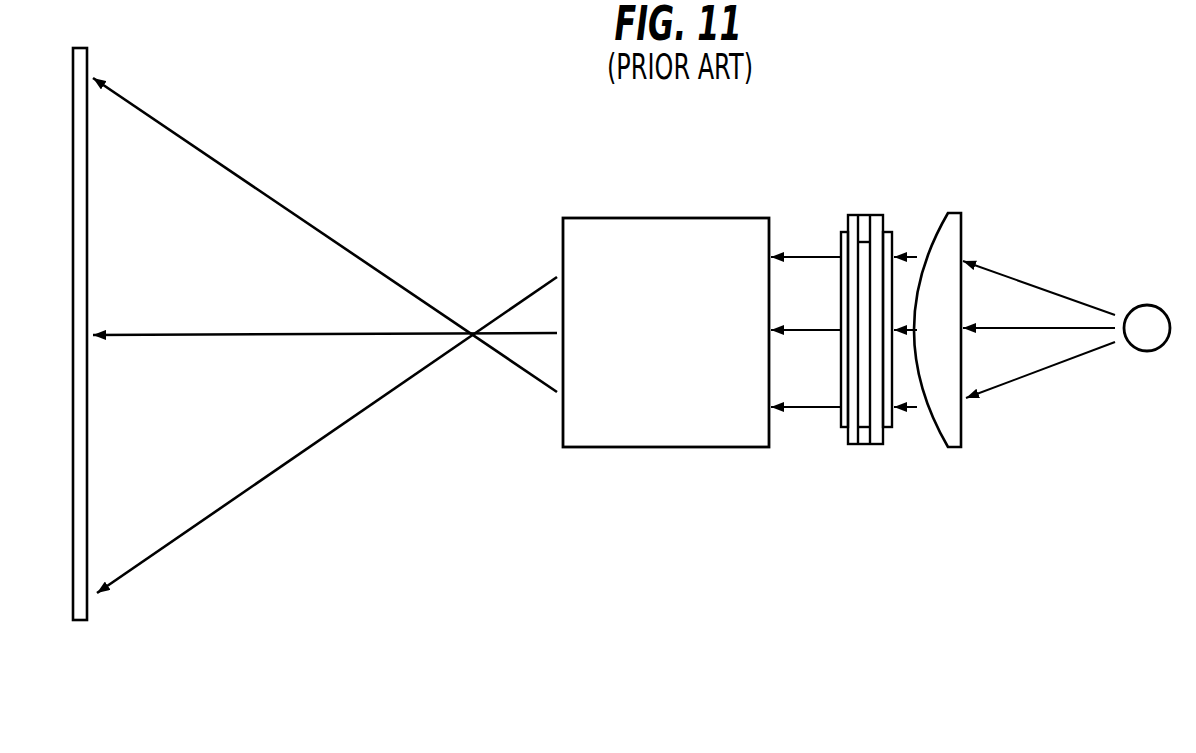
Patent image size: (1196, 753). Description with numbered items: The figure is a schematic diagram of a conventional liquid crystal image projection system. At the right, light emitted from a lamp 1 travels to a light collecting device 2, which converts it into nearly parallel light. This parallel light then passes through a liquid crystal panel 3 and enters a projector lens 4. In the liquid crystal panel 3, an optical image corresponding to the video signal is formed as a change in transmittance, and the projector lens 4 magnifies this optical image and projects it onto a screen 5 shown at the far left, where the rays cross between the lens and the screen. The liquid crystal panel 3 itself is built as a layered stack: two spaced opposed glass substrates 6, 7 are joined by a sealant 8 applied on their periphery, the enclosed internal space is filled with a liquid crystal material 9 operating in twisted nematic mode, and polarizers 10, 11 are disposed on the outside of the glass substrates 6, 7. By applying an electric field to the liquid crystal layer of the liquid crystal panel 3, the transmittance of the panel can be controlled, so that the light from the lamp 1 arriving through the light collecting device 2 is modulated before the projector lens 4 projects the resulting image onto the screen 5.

The lamp 1 is at (1140, 318).
The light collecting device 2 is at (952, 213).
The liquid crystal panel 3 is at (888, 192).
The projector lens 4 is at (688, 217).
The screen 5 is at (103, 319).
The glass substrate 6 is at (878, 447).
The glass substrate 7 is at (850, 444).
The sealant 8 is at (877, 214).
The liquid crystal material 9 is at (863, 257).
The polarizer 10 is at (892, 433).
The polarizer 11 is at (843, 428).